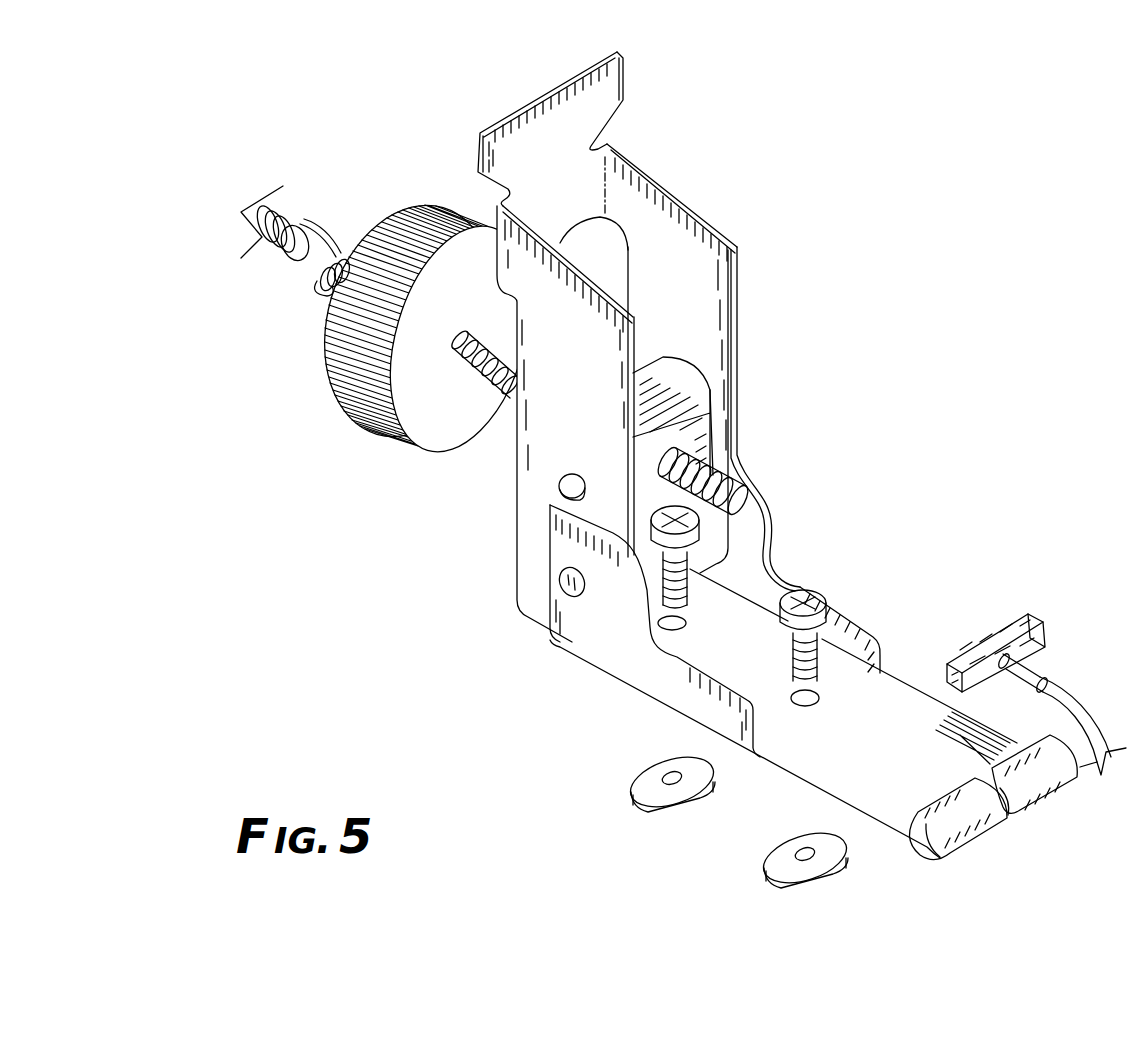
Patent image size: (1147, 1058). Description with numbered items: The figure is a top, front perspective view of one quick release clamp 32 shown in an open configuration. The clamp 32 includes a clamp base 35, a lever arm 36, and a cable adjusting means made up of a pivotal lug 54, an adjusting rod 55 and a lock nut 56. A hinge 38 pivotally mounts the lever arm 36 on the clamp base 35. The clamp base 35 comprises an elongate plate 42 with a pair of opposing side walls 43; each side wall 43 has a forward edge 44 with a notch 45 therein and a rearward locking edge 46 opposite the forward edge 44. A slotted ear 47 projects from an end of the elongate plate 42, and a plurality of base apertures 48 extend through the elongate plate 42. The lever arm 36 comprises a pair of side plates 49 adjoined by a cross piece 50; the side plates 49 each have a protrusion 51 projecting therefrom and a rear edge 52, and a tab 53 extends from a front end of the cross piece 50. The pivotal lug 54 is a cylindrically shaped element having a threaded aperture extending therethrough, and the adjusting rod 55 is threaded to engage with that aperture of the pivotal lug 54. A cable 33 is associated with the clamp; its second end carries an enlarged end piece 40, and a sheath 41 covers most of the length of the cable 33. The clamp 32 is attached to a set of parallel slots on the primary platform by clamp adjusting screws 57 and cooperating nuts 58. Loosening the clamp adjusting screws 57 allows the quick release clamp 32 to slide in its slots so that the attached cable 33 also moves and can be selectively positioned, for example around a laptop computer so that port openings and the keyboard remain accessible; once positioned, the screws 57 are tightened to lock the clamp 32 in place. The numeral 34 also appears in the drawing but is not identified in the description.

The quick release clamp 32 is at (805, 465).
The cable 33 is at (1040, 663).
The spring 34 is at (302, 223).
The clamp base 35 is at (900, 680).
The lever arm 36 is at (643, 347).
The hinge 38 is at (560, 588).
The enlarged end piece 40 is at (1037, 620).
The sheath 41 is at (1100, 713).
The elongate plate 42 is at (796, 703).
The side wall 43 is at (762, 591).
The forward edge 44 is at (777, 547).
The notch 45 is at (780, 573).
The rearward locking edge 46 is at (547, 617).
The slotted ear 47 is at (943, 820).
The base aperture 48 is at (793, 697).
The side plate 49 is at (683, 291).
The cross piece 50 is at (573, 216).
The protrusion 51 is at (560, 490).
The rear edge 52 is at (533, 610).
The tab 53 is at (617, 93).
The pivotal lug 54 is at (703, 375).
The adjusting rod 55 is at (503, 390).
The lock nut 56 is at (390, 428).
The clamp adjusting screw 57 is at (660, 478).
The nut 58 is at (760, 872).